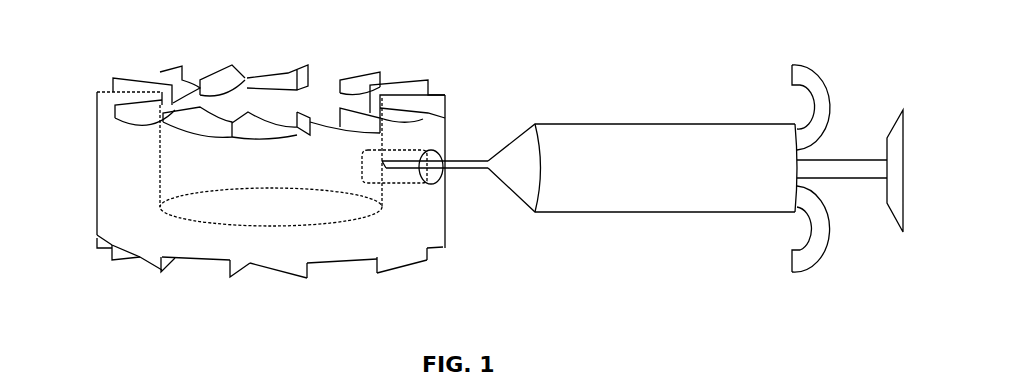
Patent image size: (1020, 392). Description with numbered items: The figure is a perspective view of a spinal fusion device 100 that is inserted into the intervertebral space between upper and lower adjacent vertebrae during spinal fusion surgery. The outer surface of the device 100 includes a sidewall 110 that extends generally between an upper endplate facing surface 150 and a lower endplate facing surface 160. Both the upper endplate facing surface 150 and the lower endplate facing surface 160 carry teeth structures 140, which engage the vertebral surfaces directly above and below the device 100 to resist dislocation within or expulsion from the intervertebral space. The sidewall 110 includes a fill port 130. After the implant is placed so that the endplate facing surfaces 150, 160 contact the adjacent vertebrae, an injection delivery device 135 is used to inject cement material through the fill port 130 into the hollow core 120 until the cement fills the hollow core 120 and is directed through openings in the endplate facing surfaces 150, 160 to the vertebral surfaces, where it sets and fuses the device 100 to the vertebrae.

The spinal fusion device 100 is at (105, 40).
The sidewall 110 is at (89, 183).
The hollow core 120 is at (315, 105).
The fill port 130 is at (447, 175).
The injection delivery device 135 is at (592, 130).
The teeth structures 140 is at (181, 76).
The upper endplate facing surface 150 is at (387, 62).
The lower endplate facing surface 160 is at (211, 281).